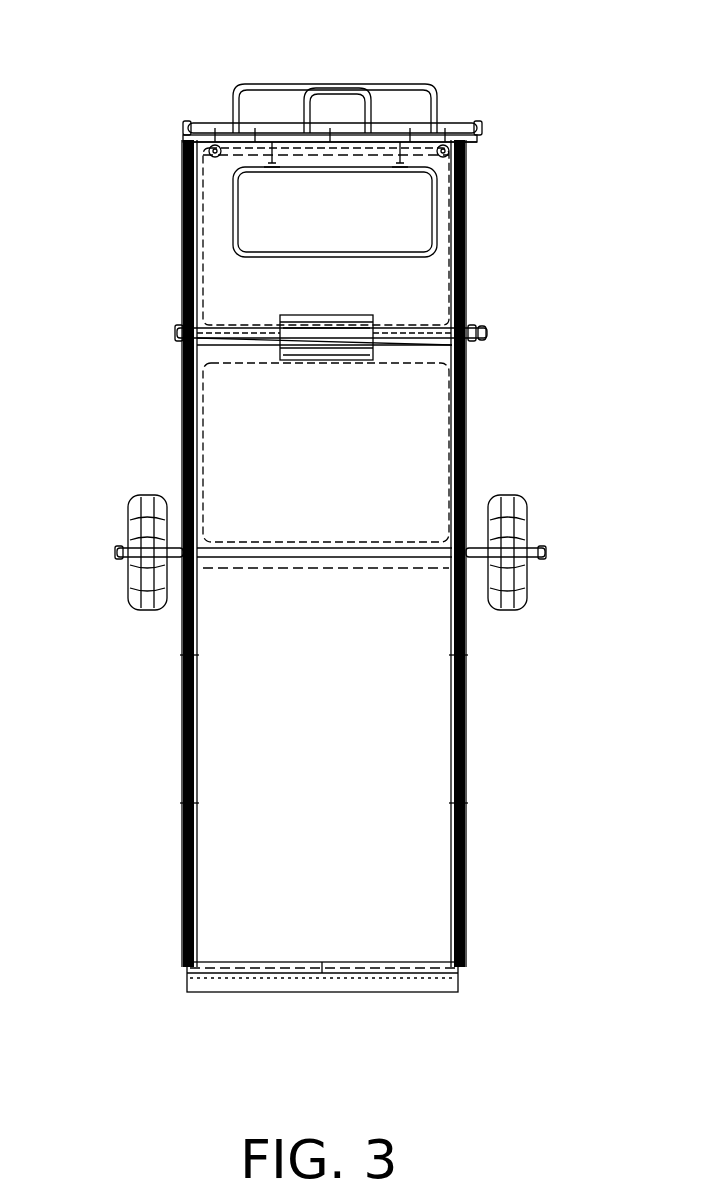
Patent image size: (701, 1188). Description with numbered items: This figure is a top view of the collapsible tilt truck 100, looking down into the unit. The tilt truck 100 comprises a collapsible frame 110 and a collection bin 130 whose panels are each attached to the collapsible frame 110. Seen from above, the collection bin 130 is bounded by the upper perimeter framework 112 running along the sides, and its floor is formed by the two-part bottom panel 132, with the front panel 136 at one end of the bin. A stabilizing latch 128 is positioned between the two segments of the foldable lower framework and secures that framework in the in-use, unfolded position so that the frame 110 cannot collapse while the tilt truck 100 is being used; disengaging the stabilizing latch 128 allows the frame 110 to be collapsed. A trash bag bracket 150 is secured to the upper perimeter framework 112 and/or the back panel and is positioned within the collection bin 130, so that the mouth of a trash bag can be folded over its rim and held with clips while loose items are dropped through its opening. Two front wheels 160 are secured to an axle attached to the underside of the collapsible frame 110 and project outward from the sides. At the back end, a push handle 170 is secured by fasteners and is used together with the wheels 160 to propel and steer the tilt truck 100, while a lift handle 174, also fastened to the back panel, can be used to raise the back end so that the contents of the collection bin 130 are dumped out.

The tilt truck 100 is at (332, 509).
The collapsible frame 110 is at (183, 400).
The upper perimeter framework 112 is at (183, 765).
The stabilizing latch 128 is at (353, 326).
The collection bin 130 is at (393, 603).
The two-part bottom panel 132 is at (268, 335).
The front panel 136 is at (417, 892).
The trash bag bracket 150 is at (330, 255).
The wheels 160 is at (145, 520).
The push handle 170 is at (240, 84).
The lift handle 174 is at (368, 92).